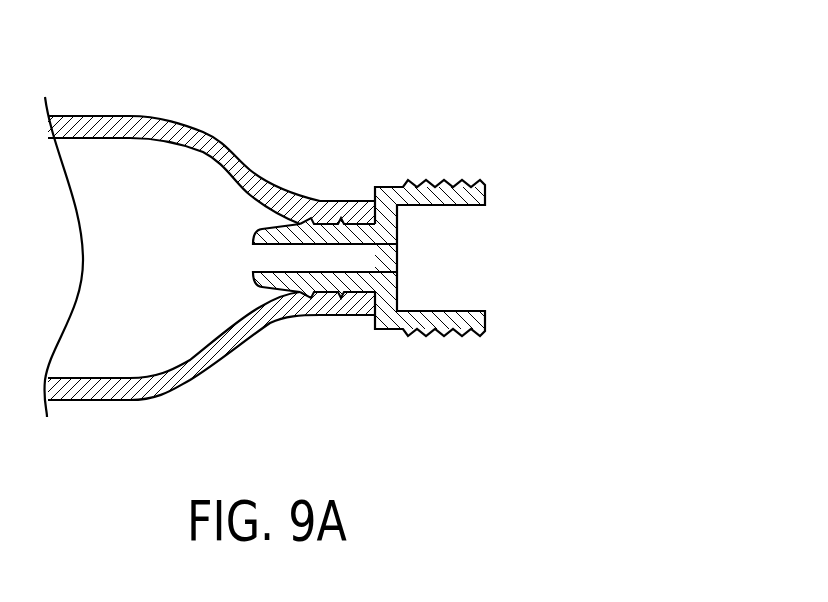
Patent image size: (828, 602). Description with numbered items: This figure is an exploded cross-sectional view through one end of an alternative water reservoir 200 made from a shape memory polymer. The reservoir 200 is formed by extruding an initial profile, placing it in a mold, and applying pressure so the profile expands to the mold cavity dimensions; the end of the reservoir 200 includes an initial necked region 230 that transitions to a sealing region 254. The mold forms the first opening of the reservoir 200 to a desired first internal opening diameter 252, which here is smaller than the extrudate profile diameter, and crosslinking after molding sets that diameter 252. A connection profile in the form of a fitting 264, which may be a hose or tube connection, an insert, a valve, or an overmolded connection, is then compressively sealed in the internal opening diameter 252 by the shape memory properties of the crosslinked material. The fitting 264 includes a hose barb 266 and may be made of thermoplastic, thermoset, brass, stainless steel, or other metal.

The reservoir 200 is at (97, 79).
The initial necked region 230 is at (203, 132).
The desired first internal opening diameter 252 is at (353, 297).
The sealing region 254 is at (337, 196).
The fitting 264 is at (383, 187).
The hose barb 266 is at (300, 292).